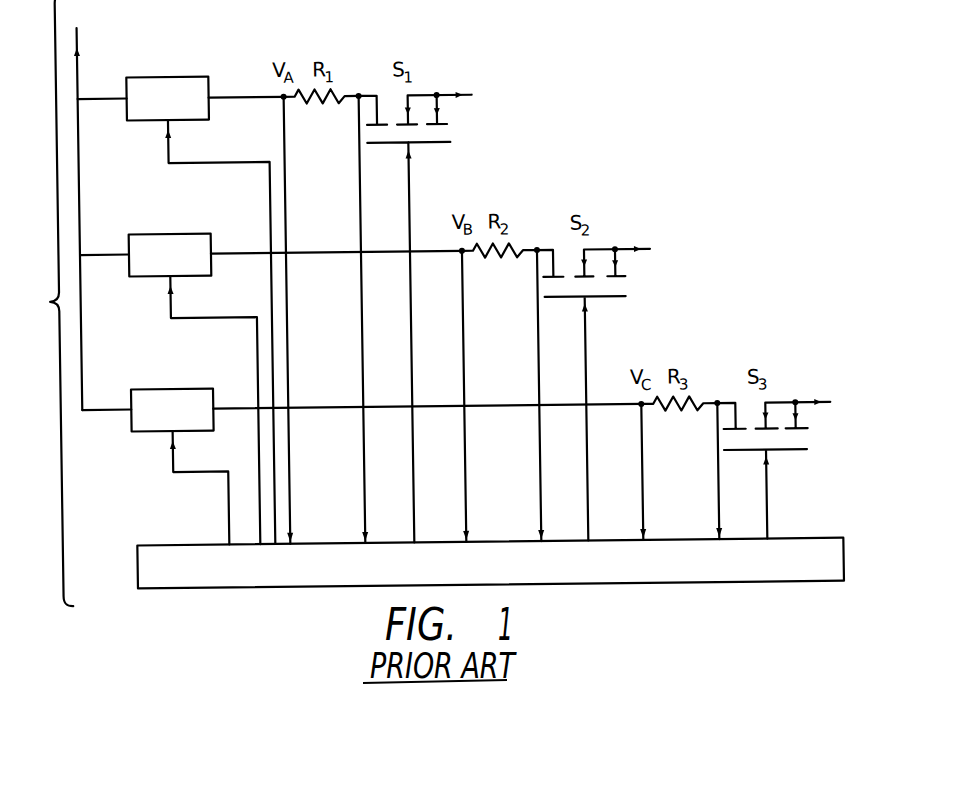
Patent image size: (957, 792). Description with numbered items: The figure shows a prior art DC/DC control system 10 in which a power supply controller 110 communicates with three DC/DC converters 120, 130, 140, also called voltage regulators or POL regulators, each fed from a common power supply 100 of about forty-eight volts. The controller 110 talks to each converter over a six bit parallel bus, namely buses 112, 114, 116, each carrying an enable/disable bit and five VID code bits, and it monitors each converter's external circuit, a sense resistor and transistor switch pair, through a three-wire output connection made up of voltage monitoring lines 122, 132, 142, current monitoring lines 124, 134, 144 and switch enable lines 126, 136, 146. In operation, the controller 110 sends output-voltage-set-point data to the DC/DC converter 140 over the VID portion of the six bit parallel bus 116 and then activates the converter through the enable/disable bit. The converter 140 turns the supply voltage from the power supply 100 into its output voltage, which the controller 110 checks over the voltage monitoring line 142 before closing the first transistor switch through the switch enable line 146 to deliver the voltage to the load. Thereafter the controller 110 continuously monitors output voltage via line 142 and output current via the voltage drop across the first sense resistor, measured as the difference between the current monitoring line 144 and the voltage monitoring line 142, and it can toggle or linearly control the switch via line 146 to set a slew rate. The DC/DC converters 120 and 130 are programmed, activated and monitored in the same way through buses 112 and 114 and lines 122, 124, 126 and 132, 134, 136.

The DC/DC control system 10 is at (50, 298).
The power supply 100 is at (81, 201).
The power supply controller 110 is at (132, 558).
The six bit parallel bus 112 is at (226, 500).
The six bit parallel bus 114 is at (256, 420).
The six bit parallel bus 116 is at (272, 494).
The DC/DC converter 120 is at (211, 397).
The voltage monitoring line 122 is at (640, 438).
The current monitoring line 124 is at (715, 482).
The switch enable line 126 is at (763, 481).
The DC/DC converter 130 is at (211, 262).
The voltage monitoring line 132 is at (463, 310).
The current monitoring line 134 is at (537, 351).
The switch enable line 136 is at (585, 337).
The DC/DC converter 140 is at (210, 102).
The voltage monitoring line 142 is at (287, 143).
The current monitoring line 144 is at (361, 174).
The switch enable line 146 is at (410, 171).